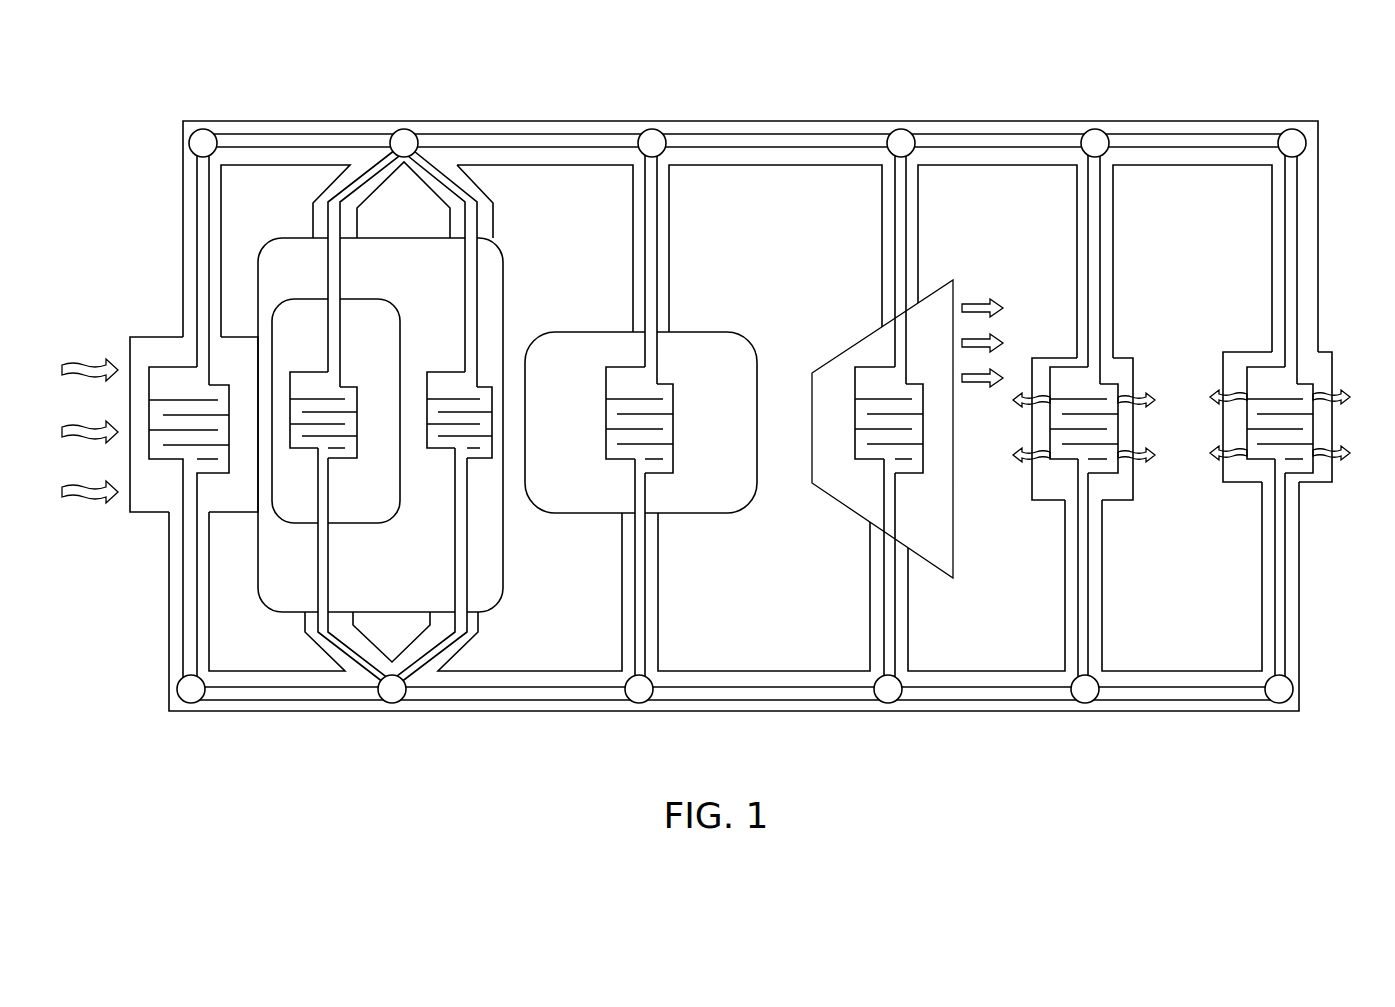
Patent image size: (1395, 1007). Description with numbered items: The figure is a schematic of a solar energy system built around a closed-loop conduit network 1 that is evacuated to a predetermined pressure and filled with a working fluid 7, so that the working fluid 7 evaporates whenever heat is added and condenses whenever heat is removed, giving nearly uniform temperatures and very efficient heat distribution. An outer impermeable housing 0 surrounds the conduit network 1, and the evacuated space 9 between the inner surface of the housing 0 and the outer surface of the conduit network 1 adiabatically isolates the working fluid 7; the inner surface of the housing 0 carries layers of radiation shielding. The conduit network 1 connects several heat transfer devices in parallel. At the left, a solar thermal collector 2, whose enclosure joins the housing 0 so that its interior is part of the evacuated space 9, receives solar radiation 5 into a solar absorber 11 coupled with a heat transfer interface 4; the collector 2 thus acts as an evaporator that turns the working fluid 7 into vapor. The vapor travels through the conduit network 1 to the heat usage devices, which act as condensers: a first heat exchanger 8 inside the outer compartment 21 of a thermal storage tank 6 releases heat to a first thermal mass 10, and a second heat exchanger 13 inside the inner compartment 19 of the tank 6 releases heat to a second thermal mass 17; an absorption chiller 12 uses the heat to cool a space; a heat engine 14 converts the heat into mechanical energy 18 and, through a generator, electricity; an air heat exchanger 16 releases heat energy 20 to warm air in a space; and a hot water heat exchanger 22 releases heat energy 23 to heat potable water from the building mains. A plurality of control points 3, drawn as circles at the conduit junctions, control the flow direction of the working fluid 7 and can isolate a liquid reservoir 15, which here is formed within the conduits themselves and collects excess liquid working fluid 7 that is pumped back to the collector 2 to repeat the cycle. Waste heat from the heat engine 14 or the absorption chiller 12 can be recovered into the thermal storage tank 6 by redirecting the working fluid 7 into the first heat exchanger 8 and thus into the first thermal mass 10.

The outer impermeable housing 0 is at (183, 121).
The closed-loop conduit network 1 is at (196, 260).
The solar thermal collector 2 is at (152, 350).
The control points 3 is at (205, 130).
The heat transfer interface 4 is at (222, 452).
The solar radiation 5 is at (78, 367).
The thermal storage tank 6 is at (283, 238).
The working fluid 7 is at (202, 203).
The first heat exchanger 8 is at (440, 440).
The evacuated space 9 is at (632, 213).
The first thermal mass 10 is at (406, 577).
The solar absorber 11 is at (212, 387).
The absorption chiller 12 is at (580, 352).
The second heat exchanger 13 is at (315, 393).
The heat engine 14 is at (855, 347).
The liquid reservoir 15 is at (287, 693).
The air heat exchanger 16 is at (1062, 452).
The second thermal mass 17 is at (362, 502).
The mechanical energy 18 is at (976, 302).
The inner compartment 19 is at (297, 523).
The heat energy 20 is at (1148, 448).
The outer compartment 21 is at (493, 265).
The hot water heat exchanger 22 is at (1260, 377).
The heat energy 23 is at (1347, 450).